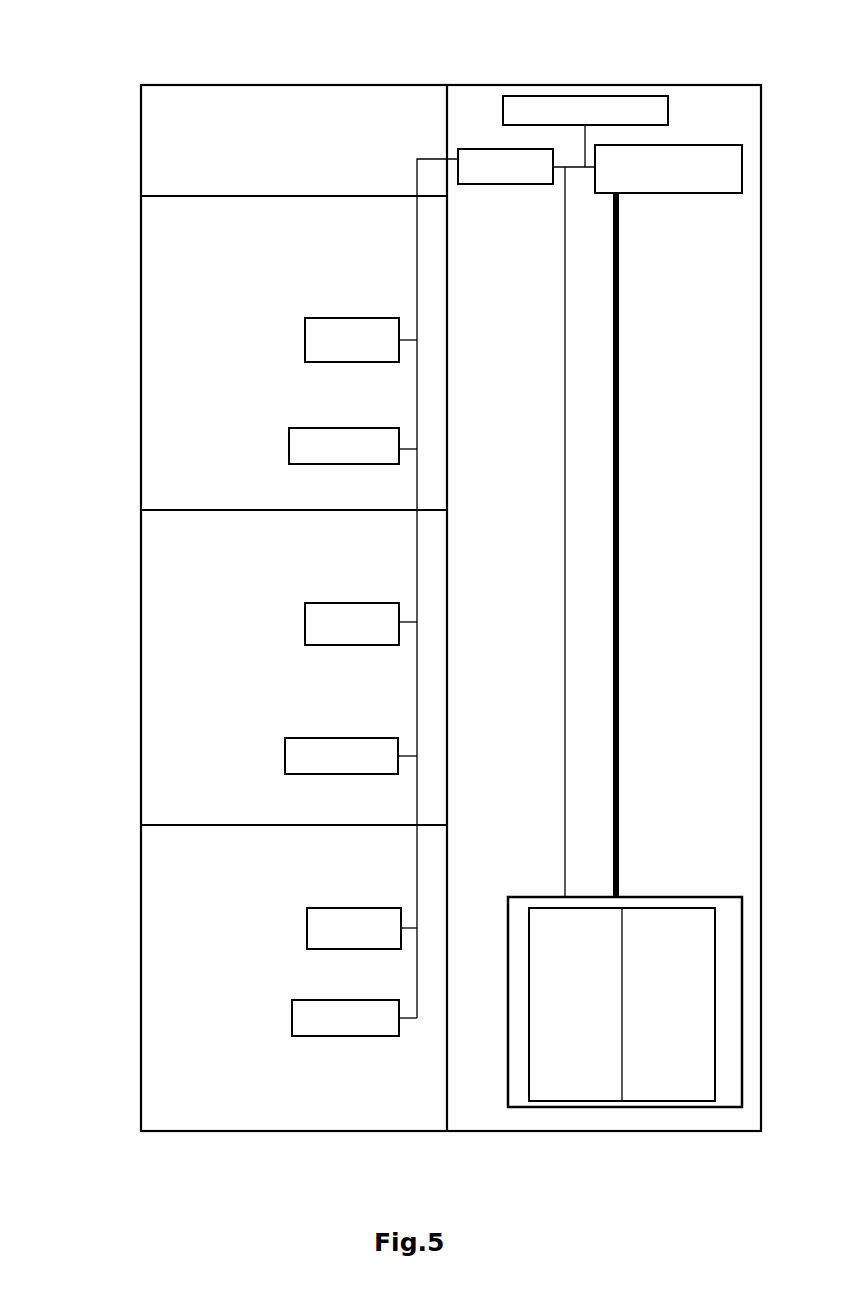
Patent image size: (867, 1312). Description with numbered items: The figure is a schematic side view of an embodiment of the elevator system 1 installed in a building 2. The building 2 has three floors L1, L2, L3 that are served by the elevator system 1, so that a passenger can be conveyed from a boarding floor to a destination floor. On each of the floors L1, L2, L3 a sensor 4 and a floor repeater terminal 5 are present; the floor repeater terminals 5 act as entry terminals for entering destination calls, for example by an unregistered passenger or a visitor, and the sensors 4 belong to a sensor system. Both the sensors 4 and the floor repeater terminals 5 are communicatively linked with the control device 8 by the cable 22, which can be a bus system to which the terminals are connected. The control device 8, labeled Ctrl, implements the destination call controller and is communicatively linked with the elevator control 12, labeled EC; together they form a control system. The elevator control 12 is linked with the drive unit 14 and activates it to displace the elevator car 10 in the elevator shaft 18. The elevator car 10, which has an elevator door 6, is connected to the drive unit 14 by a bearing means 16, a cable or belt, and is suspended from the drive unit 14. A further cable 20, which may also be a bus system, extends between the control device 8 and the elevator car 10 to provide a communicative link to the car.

The elevator system 1 is at (387, 147).
The building 2 is at (272, 86).
The sensor 4 is at (302, 332).
The floor repeater terminal 5 is at (288, 443).
The elevator door 6 is at (546, 992).
The control device 8 is at (527, 187).
The elevator car 10 is at (601, 1108).
The elevator control 12 is at (657, 103).
The drive unit 14 is at (670, 192).
The bearing means 16 is at (619, 475).
The elevator shaft 18 is at (702, 744).
The cable 20 is at (565, 545).
The cable 22 is at (417, 302).
The floor L1 is at (158, 1015).
The floor L2 is at (171, 681).
The floor L3 is at (167, 359).